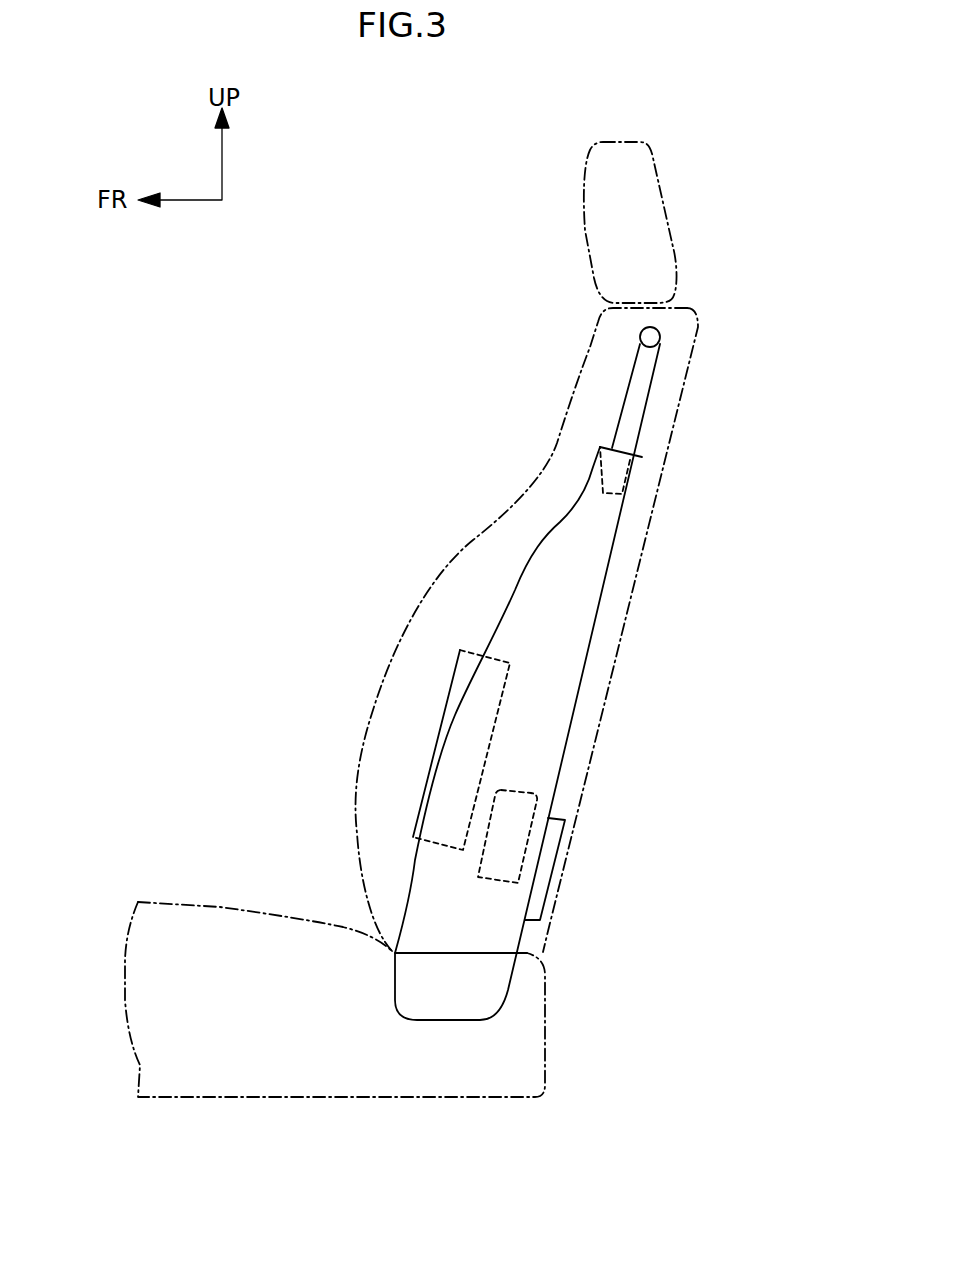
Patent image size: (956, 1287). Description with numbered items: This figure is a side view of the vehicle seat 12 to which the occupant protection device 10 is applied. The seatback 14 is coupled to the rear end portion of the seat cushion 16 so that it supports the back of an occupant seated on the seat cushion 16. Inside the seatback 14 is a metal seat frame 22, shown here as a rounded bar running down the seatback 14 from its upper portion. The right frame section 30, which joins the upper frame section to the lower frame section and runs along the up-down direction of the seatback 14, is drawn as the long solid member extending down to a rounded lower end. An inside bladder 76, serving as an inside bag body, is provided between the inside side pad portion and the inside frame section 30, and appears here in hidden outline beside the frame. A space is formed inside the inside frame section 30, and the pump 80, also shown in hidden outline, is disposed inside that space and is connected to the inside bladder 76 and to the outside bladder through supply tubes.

The occupant protection device 10 is at (529, 673).
The vehicle seat 12 is at (302, 345).
The seatback 14 is at (690, 429).
The seat cushion 16 is at (228, 906).
The seat frame 22 is at (668, 374).
The right frame section 30 is at (587, 605).
The inside bladder 76 is at (453, 703).
The pump 80 is at (521, 801).